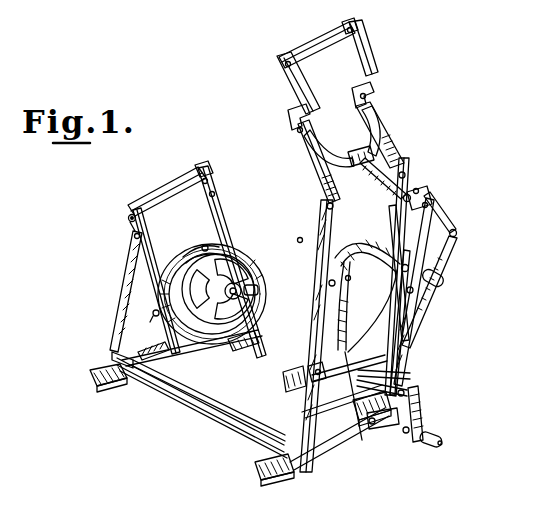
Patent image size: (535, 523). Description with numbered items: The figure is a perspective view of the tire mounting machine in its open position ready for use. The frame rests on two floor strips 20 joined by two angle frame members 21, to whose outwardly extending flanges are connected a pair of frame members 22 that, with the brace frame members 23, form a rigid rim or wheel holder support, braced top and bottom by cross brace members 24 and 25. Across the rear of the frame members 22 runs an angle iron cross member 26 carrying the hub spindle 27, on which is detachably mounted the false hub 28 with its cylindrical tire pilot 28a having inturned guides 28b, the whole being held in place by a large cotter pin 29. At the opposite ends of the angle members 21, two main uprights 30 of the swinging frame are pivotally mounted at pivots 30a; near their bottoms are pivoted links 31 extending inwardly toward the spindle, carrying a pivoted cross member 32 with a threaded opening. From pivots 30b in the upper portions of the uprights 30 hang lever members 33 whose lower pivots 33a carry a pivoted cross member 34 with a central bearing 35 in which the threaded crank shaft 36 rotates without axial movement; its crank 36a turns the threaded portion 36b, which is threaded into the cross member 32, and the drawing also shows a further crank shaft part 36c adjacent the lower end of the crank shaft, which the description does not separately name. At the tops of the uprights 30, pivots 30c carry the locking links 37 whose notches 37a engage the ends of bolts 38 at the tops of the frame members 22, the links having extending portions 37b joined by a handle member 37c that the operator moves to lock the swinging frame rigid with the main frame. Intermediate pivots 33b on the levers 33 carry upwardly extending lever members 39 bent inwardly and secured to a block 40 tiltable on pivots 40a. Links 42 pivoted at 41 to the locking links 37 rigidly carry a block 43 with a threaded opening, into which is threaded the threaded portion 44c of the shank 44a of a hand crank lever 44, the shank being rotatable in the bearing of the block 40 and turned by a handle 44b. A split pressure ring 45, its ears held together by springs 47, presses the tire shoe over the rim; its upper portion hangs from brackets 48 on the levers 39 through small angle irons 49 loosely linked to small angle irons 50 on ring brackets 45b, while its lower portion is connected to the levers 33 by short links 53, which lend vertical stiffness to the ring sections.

The floor strips 20 is at (92, 374).
The frame members 21 is at (232, 416).
The frame members 22 is at (151, 277).
The brace frame members 23 is at (122, 268).
The cross brace member 24 is at (162, 199).
The cross brace member 25 is at (228, 376).
The angle iron cross member 26 is at (156, 317).
The hub spindle 27 is at (242, 298).
The false hub 28 is at (170, 294).
The tire pilot 28a is at (207, 246).
The inturned guides 28b is at (189, 262).
The cotter pin 29 is at (253, 283).
The main uprights 30 is at (414, 182).
The pivots 30a is at (298, 474).
The pivots 30b is at (298, 239).
The pivots 30c is at (328, 206).
The links 31 is at (312, 390).
The cross member 32 is at (307, 364).
The lever members 33 is at (404, 353).
The pivots 33a is at (412, 377).
The pivots 33b is at (335, 322).
The pivoted cross member 34 is at (372, 425).
The bearing 35 is at (405, 393).
The threaded crank shaft 36 is at (420, 404).
The crank 36a is at (405, 433).
The threaded portion 36b is at (318, 398).
The roller 36c is at (446, 443).
The locking links 37 is at (314, 160).
The notches 37a is at (290, 115).
The extending portions 37b is at (290, 78).
The handle member 37c is at (311, 57).
The bolts 38 is at (128, 219).
The lever members 39 is at (443, 269).
The block 40 is at (433, 194).
The pivots 40a is at (420, 188).
The pivots 41 is at (368, 95).
The links 42 is at (334, 150).
The block 43 is at (362, 136).
The hand crank lever 44 is at (444, 257).
The shank 44a is at (452, 214).
The handle 44b is at (446, 287).
The threaded portion 44c is at (392, 186).
The pressure ring 45 is at (328, 283).
The brackets 45b is at (330, 281).
The springs 47 is at (382, 228).
The brackets 48 is at (367, 311).
The small angle irons 49 is at (344, 286).
The small angle irons 50 is at (292, 262).
The short links 53 is at (316, 370).